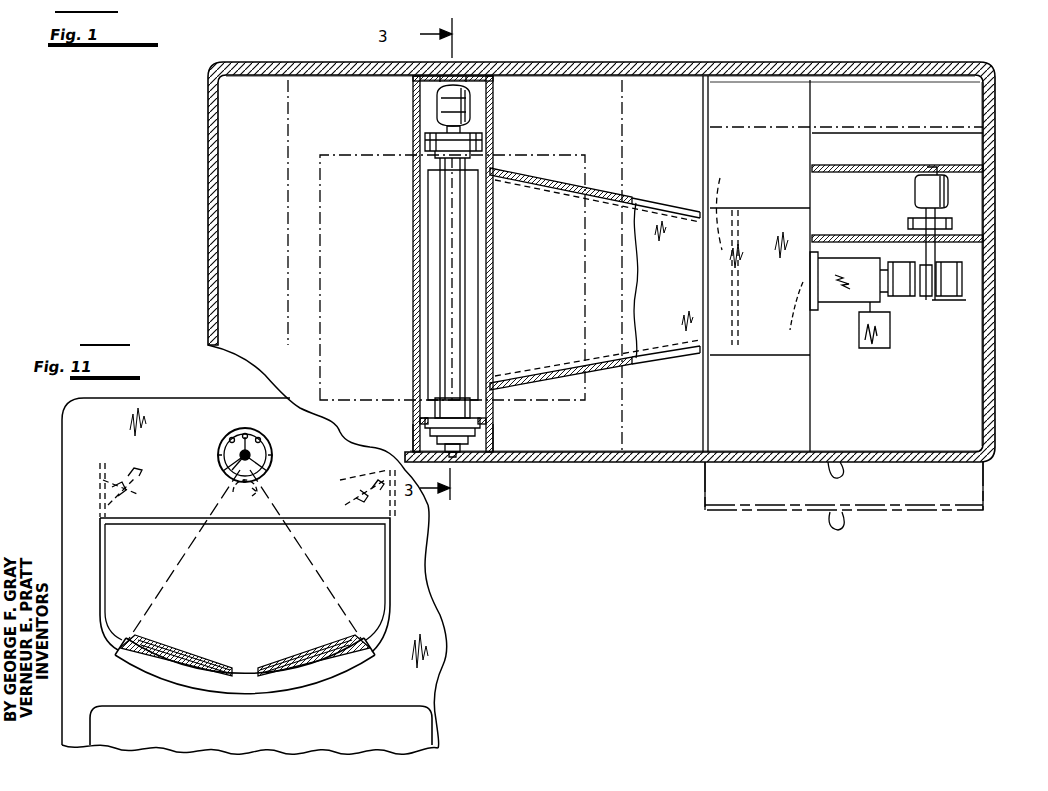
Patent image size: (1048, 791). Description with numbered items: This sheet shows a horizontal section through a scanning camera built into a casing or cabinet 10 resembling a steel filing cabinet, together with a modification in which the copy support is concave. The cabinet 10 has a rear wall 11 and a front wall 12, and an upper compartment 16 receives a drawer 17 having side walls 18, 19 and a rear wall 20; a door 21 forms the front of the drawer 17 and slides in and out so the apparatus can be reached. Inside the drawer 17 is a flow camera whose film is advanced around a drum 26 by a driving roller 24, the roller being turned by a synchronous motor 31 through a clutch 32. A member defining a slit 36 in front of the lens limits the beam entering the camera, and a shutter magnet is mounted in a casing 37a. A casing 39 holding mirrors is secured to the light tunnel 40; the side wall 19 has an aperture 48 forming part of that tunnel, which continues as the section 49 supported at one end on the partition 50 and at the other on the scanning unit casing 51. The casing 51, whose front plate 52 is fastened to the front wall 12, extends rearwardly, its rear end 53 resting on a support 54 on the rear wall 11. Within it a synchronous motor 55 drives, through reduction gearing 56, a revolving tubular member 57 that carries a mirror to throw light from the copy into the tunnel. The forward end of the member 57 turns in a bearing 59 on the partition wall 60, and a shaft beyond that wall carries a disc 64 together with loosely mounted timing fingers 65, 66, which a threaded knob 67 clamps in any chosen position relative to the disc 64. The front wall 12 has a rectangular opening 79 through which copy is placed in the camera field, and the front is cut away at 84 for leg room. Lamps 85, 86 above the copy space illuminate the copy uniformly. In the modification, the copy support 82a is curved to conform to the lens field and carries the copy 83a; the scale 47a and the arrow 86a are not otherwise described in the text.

In FIG. 1, the casing or cabinet 10 is at (616, 248).
In FIG. 1, the rear wall 11 is at (592, 68).
In FIG. 1, the front wall 12 is at (620, 452).
In FIG. 11, the front wall 12 is at (80, 416).
In FIG. 1, the compartment 16 is at (985, 390).
In FIG. 1, the drawer 17 is at (940, 422).
In FIG. 1, the side wall 18 is at (975, 343).
In FIG. 1, the side wall 19 is at (712, 368).
In FIG. 1, the rear wall 20 is at (906, 80).
In FIG. 1, the door 21 is at (938, 460).
In FIG. 1, the driving roller 24 is at (938, 296).
In FIG. 1, the drum 26 is at (900, 296).
In FIG. 1, the synchronous motor 31 is at (915, 190).
In FIG. 1, the clutch 32 is at (908, 222).
In FIG. 1, the slit 36 is at (791, 318).
In FIG. 1, the casing 37a is at (875, 348).
In FIG. 1, the casing 39 is at (728, 256).
In FIG. 1, the light tunnel 40 is at (766, 212).
In FIG. 1, the aperture 48 is at (700, 266).
In FIG. 1, the light tunnel section 49 is at (648, 180).
In FIG. 1, the partition 50 is at (705, 152).
In FIG. 1, the scanning unit casing 51 is at (493, 140).
In FIG. 1, the rear end 53 is at (488, 68).
In FIG. 1, the support 54 is at (470, 68).
In FIG. 1, the synchronous motor 55 is at (470, 105).
In FIG. 1, the reduction gearing 56 is at (425, 140).
In FIG. 1, the tubular frame or member 57 is at (442, 355).
In FIG. 1, the bearing 59 is at (470, 405).
In FIG. 1, the partition wall 60 is at (413, 410).
In FIG. 1, the disc 64 is at (480, 433).
In FIG. 1, the timing finger 65 is at (495, 448).
In FIG. 1, the timing finger 66 is at (462, 450).
In FIG. 1, the knob 67 is at (452, 457).
In FIG. 11, the knob 67 is at (221, 469).
In FIG. 11, the graduated scale 47a is at (132, 660).
In FIG. 11, the front plate 52 is at (222, 443).
In FIG. 11, the rectangular opening 79 is at (372, 556).
In FIG. 11, the concave copy support 82a is at (118, 628).
In FIG. 11, the copy 83a is at (283, 640).
In FIG. 11, the cutaway 84 is at (246, 731).
In FIG. 11, the lamp 85 is at (355, 500).
In FIG. 11, the lamp 86 is at (140, 498).
In FIG. 11, the rotation arrow 86a is at (244, 505).